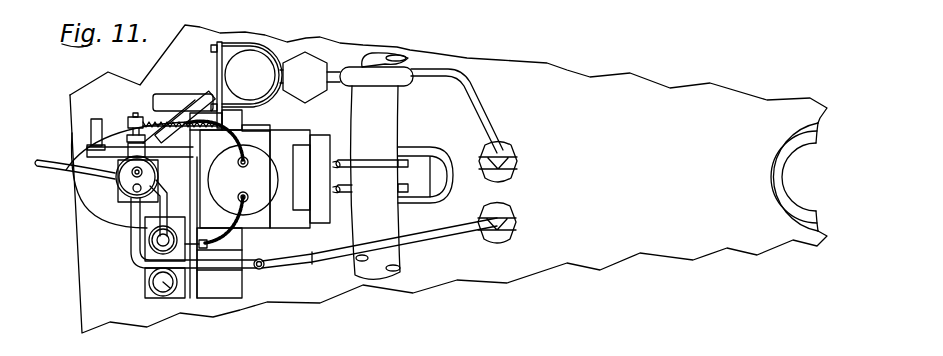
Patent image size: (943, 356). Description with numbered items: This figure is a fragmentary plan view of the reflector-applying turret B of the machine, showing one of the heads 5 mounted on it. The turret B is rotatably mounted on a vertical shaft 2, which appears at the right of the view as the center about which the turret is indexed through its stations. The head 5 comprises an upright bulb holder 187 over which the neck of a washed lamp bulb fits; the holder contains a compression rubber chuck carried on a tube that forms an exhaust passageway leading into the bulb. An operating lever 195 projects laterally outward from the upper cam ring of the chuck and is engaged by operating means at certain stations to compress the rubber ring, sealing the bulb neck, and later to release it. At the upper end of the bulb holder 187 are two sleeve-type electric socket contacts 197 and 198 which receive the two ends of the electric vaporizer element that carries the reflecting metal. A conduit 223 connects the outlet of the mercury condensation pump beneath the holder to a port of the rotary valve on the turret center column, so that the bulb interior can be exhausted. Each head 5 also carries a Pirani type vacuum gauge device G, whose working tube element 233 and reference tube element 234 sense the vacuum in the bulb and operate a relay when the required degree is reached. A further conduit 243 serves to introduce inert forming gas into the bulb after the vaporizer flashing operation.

The turret B is at (82, 316).
The vertical shaft 2 is at (798, 203).
The conduit 223 is at (194, 103).
The socket contact 197 is at (66, 136).
The operating lever 195 is at (53, 153).
The bulb holder 187 is at (118, 183).
The socket contact 198 is at (120, 190).
The head 5 is at (92, 232).
The working tube element 233 is at (148, 253).
The Pirani type vacuum gauge device G is at (133, 274).
The reference tube element 234 is at (166, 294).
The conduit 243 is at (285, 280).